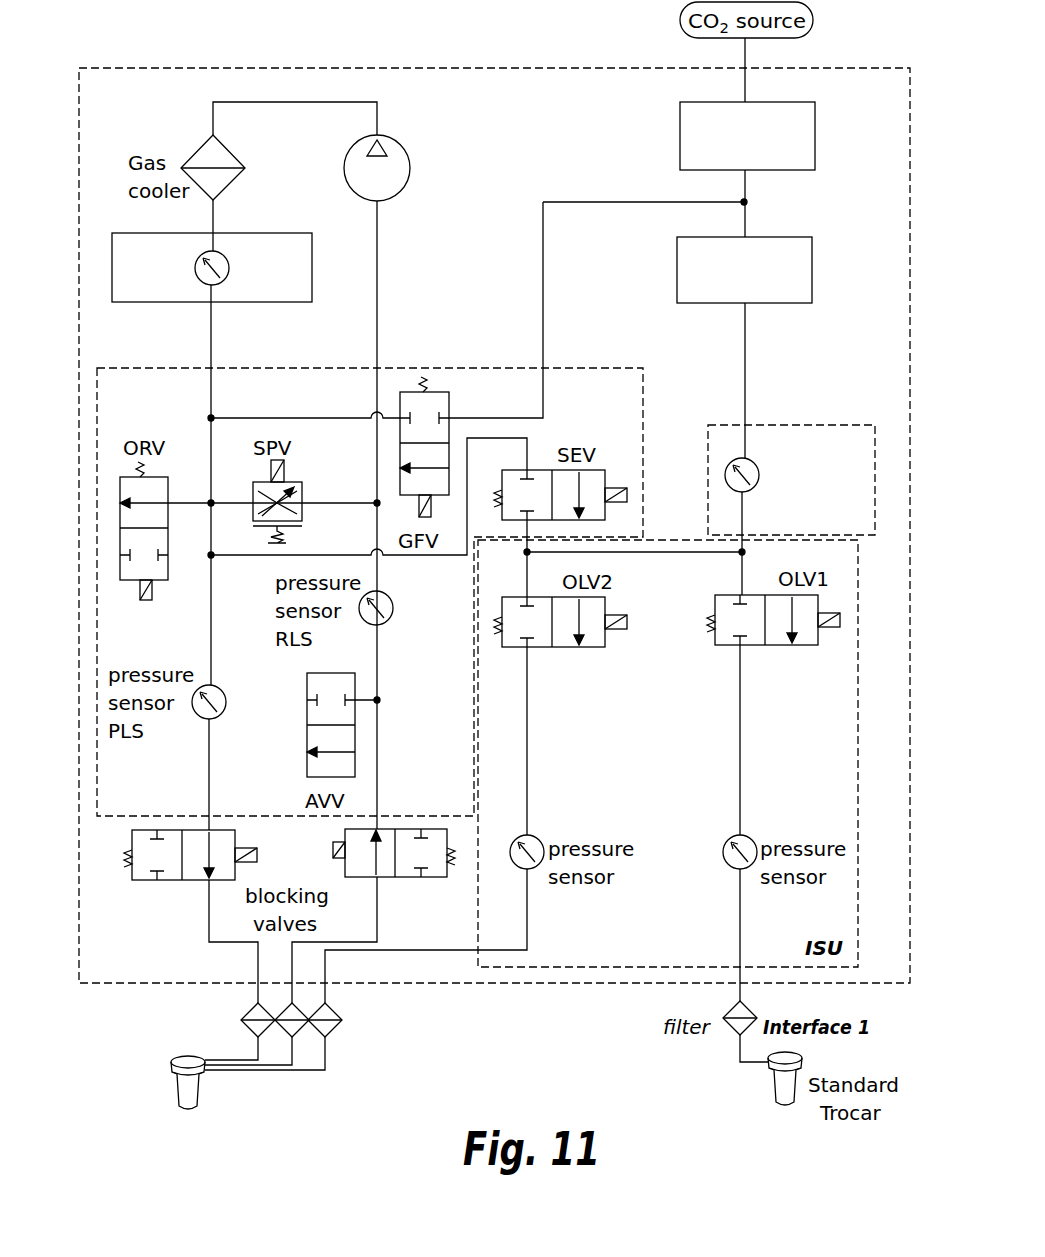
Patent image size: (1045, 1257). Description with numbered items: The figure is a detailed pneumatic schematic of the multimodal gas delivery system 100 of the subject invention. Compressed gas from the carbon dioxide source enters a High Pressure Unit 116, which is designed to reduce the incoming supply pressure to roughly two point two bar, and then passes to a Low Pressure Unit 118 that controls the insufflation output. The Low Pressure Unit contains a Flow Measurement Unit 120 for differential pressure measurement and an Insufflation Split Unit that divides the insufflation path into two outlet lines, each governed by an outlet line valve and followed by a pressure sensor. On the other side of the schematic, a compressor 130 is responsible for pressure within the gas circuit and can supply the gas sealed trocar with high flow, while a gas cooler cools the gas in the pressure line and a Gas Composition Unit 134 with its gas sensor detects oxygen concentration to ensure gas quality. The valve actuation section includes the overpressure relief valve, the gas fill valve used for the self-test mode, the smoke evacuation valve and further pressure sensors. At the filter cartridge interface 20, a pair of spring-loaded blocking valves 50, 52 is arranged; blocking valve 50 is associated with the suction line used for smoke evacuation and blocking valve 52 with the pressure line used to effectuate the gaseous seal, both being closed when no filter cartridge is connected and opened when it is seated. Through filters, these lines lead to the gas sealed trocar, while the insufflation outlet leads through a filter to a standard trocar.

The gas delivery system 100 is at (470, 60).
The High Pressure Unit (HPU) 116 is at (818, 125).
The Low Pressure Unit (LPU) 118 is at (815, 262).
The Flow Measurement Unit (FMU) 120 is at (852, 426).
The compressor 130 is at (412, 160).
The Gas Composition Unit (GCU) 134 is at (240, 305).
The filter cartridge interface 20 is at (120, 1020).
The blocking valve 50 is at (405, 880).
The blocking valve 52 is at (140, 880).